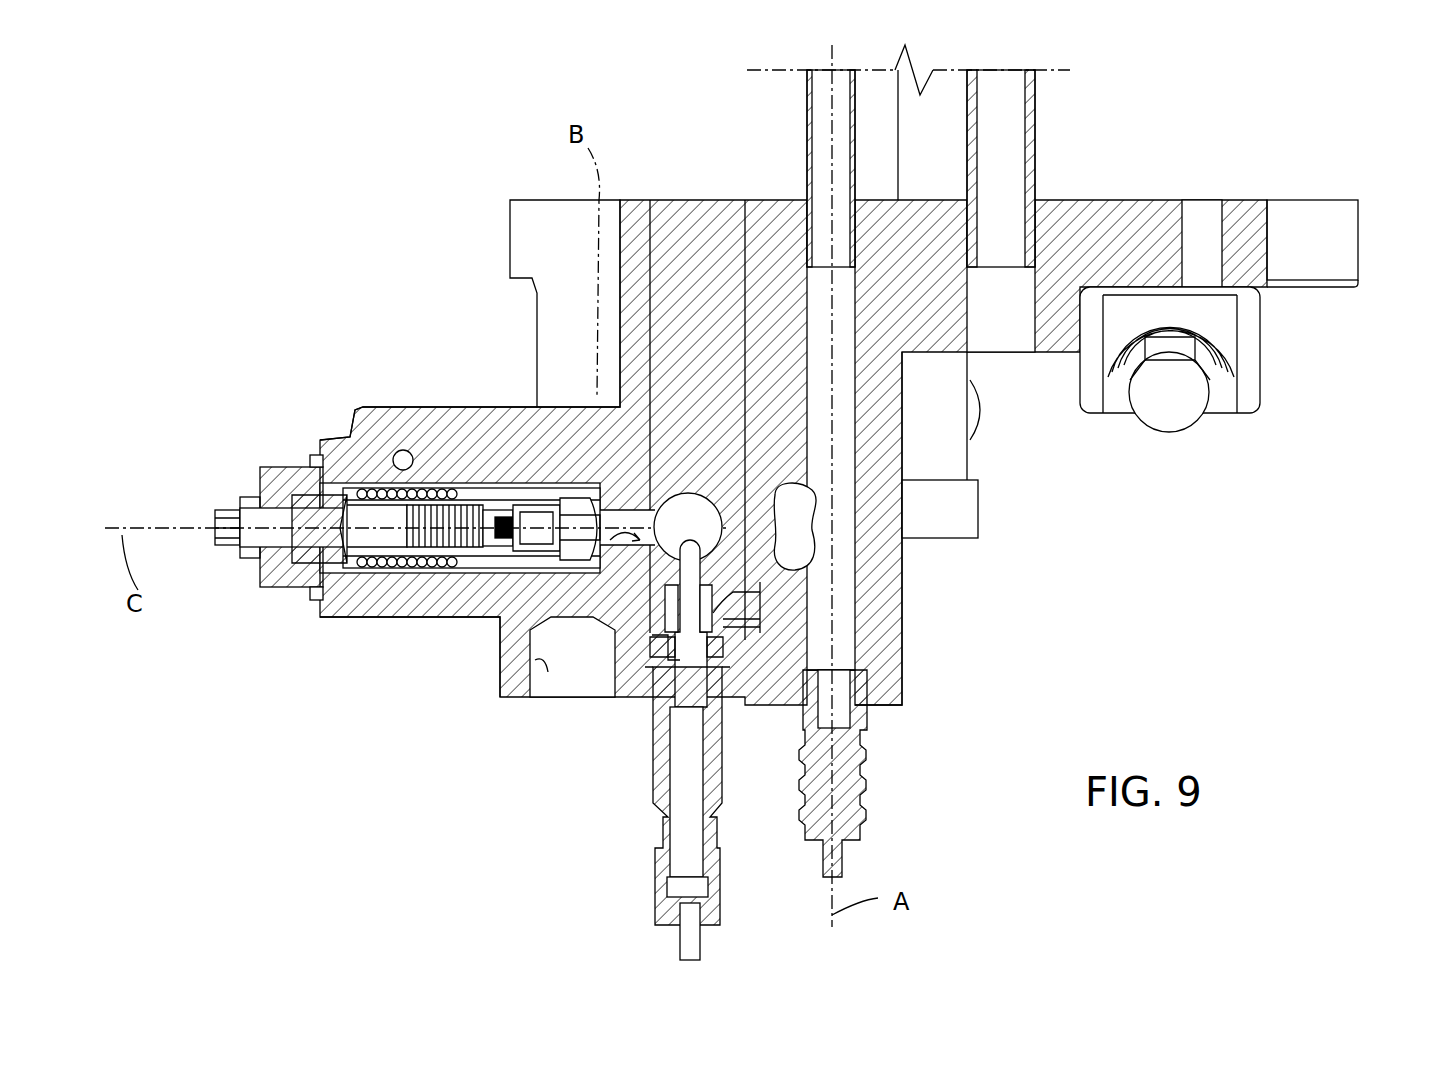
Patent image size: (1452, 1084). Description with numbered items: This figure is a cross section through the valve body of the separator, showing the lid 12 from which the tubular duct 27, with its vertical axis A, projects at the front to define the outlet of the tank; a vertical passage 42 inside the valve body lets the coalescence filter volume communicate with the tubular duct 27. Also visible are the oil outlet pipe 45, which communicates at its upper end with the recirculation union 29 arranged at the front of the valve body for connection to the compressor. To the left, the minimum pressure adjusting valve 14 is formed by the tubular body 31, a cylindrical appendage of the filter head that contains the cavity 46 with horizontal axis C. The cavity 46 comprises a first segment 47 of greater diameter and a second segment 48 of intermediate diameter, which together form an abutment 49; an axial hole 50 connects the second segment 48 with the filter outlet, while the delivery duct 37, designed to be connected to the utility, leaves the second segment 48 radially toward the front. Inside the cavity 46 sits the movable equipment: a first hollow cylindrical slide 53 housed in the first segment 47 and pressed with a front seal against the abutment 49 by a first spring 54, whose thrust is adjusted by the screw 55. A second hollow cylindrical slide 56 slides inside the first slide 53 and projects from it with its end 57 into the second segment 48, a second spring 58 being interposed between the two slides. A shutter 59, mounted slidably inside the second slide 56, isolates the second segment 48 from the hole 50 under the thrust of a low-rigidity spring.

The lid 12 is at (1360, 240).
The minimum pressure adjusting valve 14 is at (336, 428).
The tubular duct 27 is at (902, 630).
The recirculation union 29 is at (660, 870).
The tubular body of the minimum pressure valve 31 is at (385, 622).
The delivery duct 37 is at (540, 675).
The vertical passage 42 is at (812, 548).
The oil outlet pipe 45 is at (665, 668).
The cavity 46 is at (447, 487).
The first segment 47 is at (383, 485).
The second segment 48 is at (537, 488).
The abutment 49 is at (512, 650).
The axial hole 50 is at (655, 550).
The first hollow cylindrical slide 53 is at (433, 600).
The first spring 54 is at (323, 605).
The screw 55 is at (252, 560).
The second hollow cylindrical slide 56 is at (475, 580).
The end of the second slide 57 is at (495, 612).
The second spring 58 is at (402, 490).
The shutter 59 is at (498, 488).